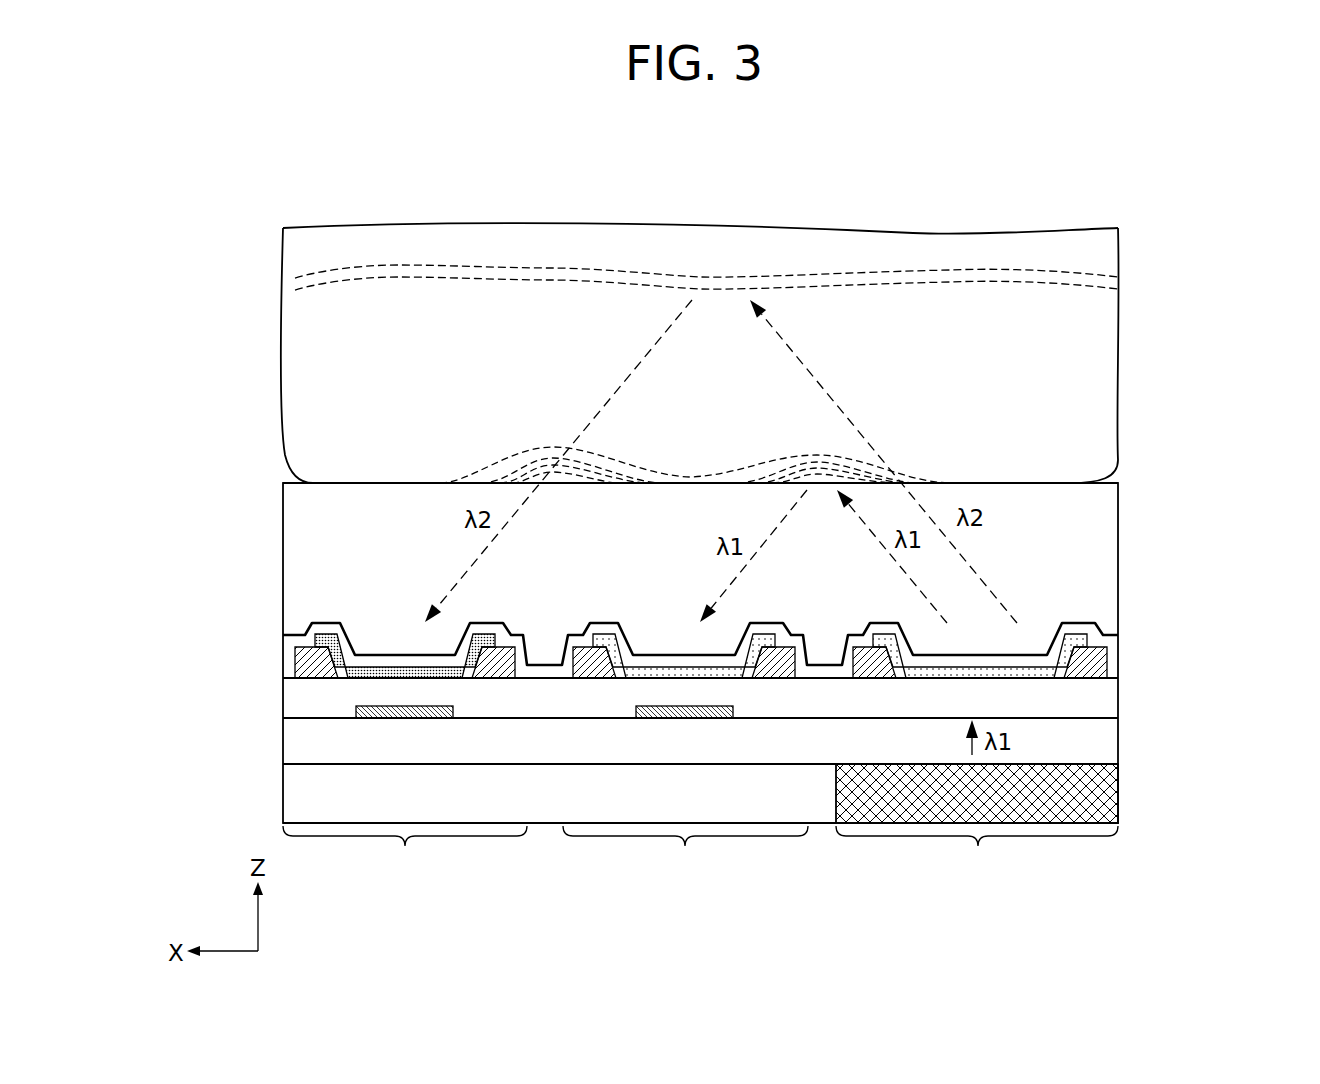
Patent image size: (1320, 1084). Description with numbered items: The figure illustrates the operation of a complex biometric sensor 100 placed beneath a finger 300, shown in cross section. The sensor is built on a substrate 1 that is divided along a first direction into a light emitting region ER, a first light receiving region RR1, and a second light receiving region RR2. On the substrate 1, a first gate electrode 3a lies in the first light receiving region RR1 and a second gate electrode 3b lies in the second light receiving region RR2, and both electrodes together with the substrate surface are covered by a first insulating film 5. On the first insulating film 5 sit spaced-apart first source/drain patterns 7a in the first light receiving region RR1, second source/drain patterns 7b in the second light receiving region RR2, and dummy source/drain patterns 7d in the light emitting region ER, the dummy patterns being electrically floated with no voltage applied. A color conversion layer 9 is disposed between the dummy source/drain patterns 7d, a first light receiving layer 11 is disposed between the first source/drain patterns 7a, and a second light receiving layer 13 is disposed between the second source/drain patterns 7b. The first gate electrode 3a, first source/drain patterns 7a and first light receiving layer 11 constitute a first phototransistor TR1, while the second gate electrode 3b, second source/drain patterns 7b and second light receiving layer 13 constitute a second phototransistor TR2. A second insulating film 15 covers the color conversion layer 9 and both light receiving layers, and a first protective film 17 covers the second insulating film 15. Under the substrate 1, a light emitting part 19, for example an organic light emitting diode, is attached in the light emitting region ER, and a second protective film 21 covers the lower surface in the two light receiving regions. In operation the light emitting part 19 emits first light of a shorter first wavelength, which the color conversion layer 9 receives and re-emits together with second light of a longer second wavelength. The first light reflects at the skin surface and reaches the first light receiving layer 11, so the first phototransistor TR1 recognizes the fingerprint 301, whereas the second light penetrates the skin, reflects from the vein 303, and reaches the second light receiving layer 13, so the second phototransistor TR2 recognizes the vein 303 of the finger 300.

The finger 300 is at (1068, 192).
The vein 303 is at (949, 268).
The fingerprint 301 is at (901, 465).
The complex biometric sensor 100 is at (1152, 493).
The first protective film 17 is at (1110, 553).
The second insulating film 15 is at (1110, 643).
The first insulating film 5 is at (1110, 701).
The substrate 1 is at (1110, 745).
The second protective film 21 is at (293, 792).
The light emitting part 19 is at (1110, 800).
The second source/drain patterns 7b is at (307, 650).
The second light receiving layer 13 is at (380, 672).
The first source/drain patterns 7a is at (592, 650).
The first light receiving layer 11 is at (655, 672).
The dummy source/drain patterns 7d is at (866, 650).
The color conversion layer 9 is at (1031, 672).
The first gate electrode 3a is at (714, 712).
The second gate electrode 3b is at (432, 712).
The first phototransistor TR1 is at (661, 740).
The second phototransistor TR2 is at (377, 740).
The first light receiving region RR1 is at (685, 850).
The second light receiving region RR2 is at (405, 850).
The light emitting region ER is at (977, 850).